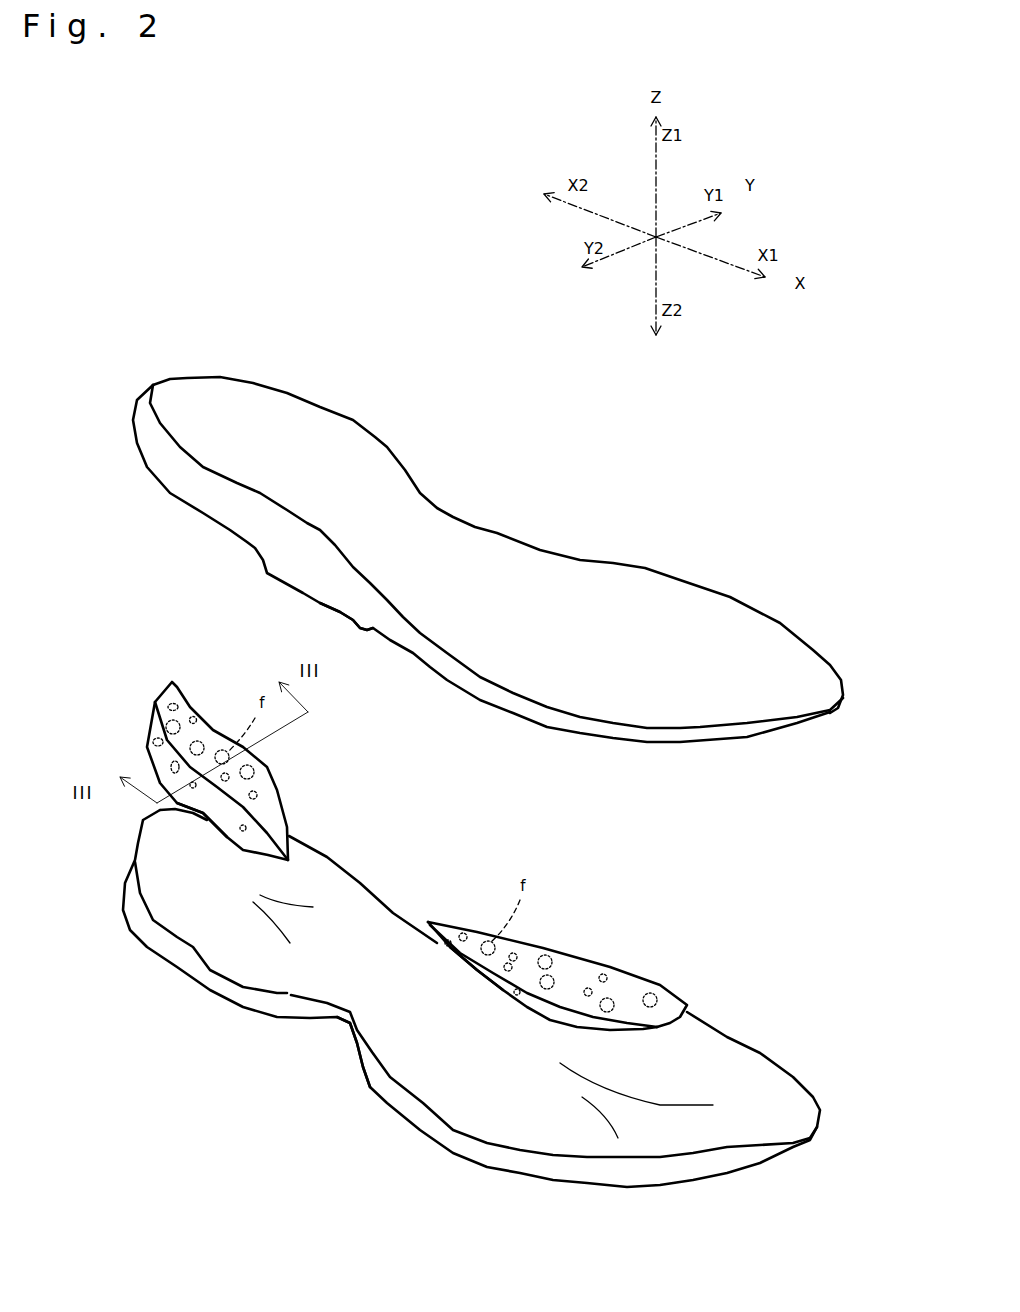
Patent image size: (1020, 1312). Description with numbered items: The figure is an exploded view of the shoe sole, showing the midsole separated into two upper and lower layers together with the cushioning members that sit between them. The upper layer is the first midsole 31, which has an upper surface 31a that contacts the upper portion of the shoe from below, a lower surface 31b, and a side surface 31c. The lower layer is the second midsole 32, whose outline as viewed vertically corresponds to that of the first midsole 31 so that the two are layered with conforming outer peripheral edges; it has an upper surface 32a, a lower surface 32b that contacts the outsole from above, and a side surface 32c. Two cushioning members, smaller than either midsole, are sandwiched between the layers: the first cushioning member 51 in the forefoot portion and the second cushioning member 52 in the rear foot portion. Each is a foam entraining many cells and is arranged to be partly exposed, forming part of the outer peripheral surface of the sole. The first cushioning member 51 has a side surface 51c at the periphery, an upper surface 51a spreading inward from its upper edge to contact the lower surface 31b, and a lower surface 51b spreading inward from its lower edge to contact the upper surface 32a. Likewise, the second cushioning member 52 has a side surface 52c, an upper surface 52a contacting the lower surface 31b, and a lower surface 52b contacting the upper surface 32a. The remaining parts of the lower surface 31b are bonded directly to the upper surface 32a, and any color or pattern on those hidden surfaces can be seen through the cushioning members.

The first midsole 31 is at (708, 615).
The upper surface 31a is at (467, 543).
The lower surface 31b is at (467, 700).
The side surface 31c is at (355, 605).
The second midsole 32 is at (762, 1077).
The upper surface 32a is at (386, 946).
The lower surface 32b is at (394, 1122).
The side surface 32c is at (368, 1078).
The first cushioning member 51 is at (565, 977).
The upper surface 51a is at (630, 986).
The lower surface 51b is at (562, 1022).
The side surface 51c is at (488, 981).
The second cushioning member 52 is at (174, 681).
The upper surface 52a is at (267, 799).
The lower surface 52b is at (239, 857).
The side surface 52c is at (210, 811).